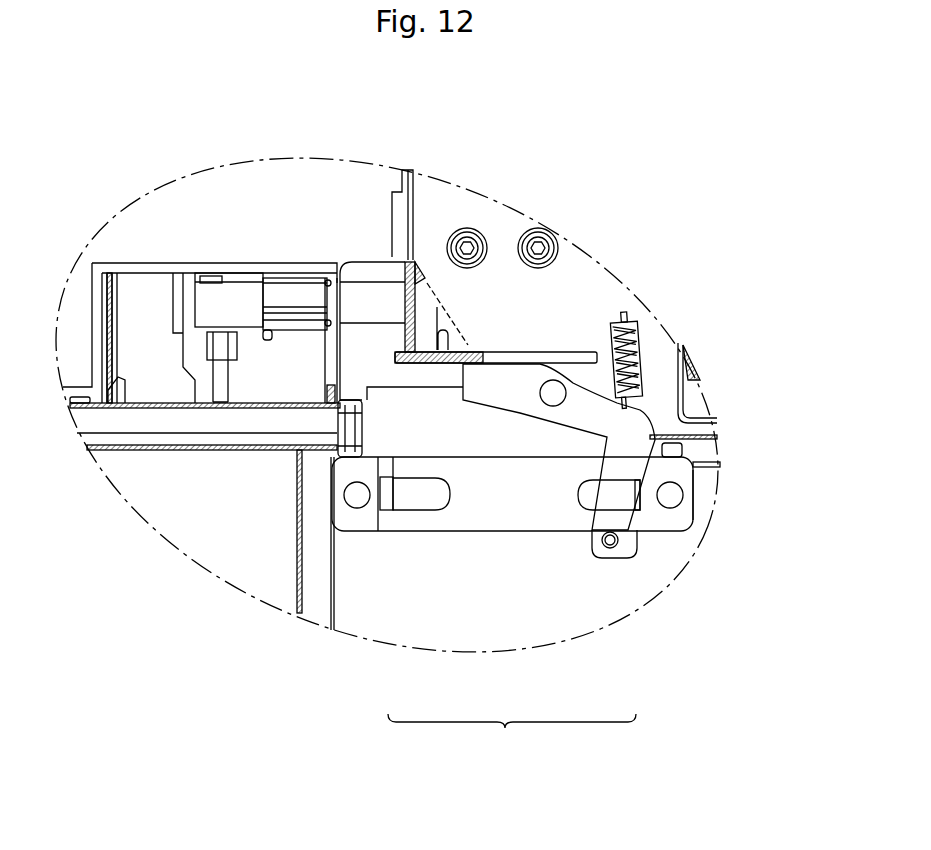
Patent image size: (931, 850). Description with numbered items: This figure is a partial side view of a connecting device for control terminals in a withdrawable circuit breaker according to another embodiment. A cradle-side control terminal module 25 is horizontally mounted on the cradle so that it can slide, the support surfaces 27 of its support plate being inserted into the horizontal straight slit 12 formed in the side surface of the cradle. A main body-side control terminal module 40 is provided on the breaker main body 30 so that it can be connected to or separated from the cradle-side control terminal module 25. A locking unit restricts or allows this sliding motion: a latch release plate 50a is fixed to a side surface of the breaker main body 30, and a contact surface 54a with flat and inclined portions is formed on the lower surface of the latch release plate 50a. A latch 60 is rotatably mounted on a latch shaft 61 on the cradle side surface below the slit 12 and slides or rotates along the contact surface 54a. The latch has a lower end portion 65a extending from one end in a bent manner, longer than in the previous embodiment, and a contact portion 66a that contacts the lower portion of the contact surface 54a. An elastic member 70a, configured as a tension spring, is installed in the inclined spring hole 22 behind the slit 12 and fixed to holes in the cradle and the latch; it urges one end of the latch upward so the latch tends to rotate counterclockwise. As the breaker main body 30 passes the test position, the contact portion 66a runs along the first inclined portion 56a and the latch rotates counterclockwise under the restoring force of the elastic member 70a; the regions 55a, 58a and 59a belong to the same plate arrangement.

The slit 12 is at (587, 357).
The spring hole 22 is at (625, 285).
The cradle-side control terminal module 25 is at (367, 297).
The support surface 27 is at (466, 345).
The breaker main body 30 is at (217, 543).
The main body-side control terminal module 40 is at (240, 300).
The latch release plate 50a is at (473, 480).
The contact surface 54a is at (512, 735).
The end portion 55a is at (601, 533).
The first inclined portion 56a is at (564, 533).
The slot 58a is at (461, 533).
The hole 59a is at (413, 533).
The latch 60 is at (585, 405).
The latch shaft 61 is at (550, 380).
The lower end portion 65a is at (690, 443).
The contact portion 66a is at (640, 550).
The elastic member 70a is at (648, 343).